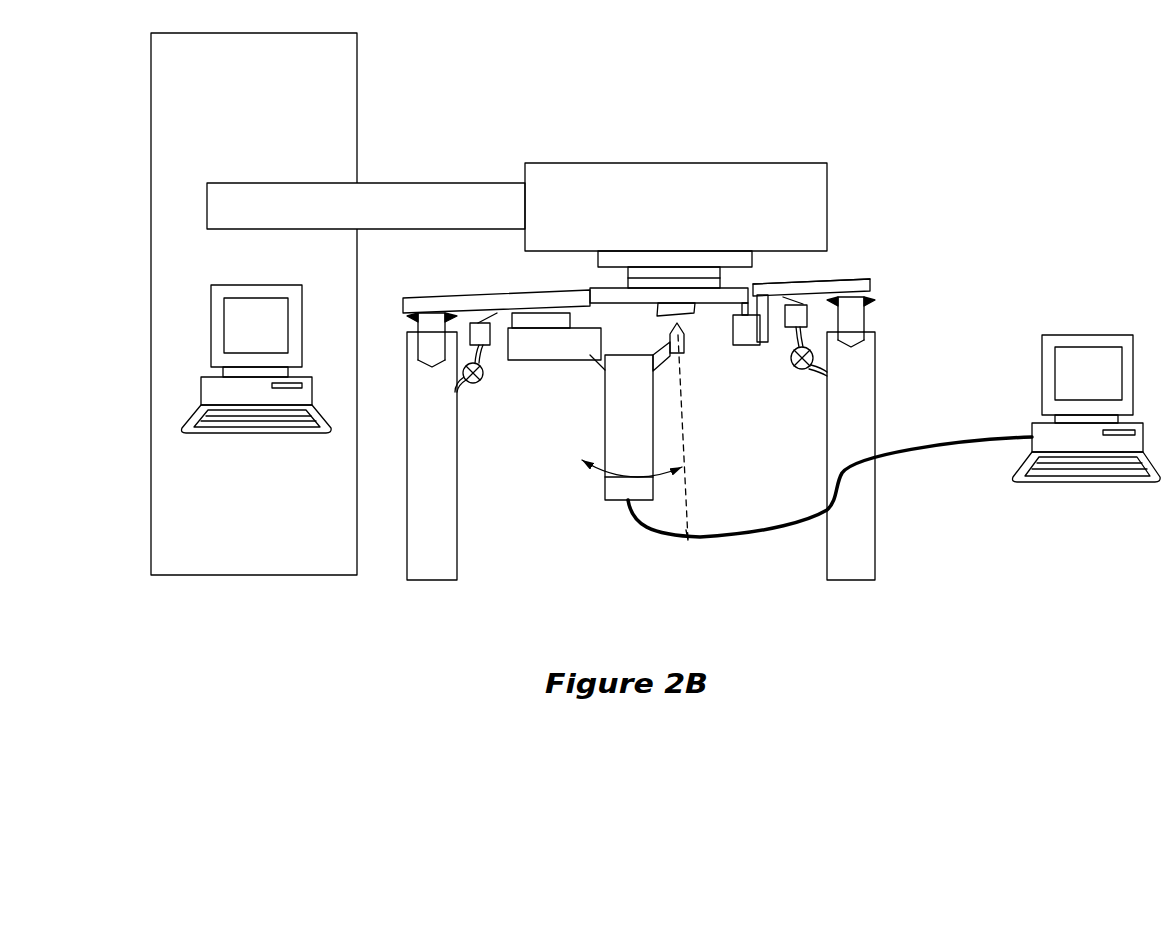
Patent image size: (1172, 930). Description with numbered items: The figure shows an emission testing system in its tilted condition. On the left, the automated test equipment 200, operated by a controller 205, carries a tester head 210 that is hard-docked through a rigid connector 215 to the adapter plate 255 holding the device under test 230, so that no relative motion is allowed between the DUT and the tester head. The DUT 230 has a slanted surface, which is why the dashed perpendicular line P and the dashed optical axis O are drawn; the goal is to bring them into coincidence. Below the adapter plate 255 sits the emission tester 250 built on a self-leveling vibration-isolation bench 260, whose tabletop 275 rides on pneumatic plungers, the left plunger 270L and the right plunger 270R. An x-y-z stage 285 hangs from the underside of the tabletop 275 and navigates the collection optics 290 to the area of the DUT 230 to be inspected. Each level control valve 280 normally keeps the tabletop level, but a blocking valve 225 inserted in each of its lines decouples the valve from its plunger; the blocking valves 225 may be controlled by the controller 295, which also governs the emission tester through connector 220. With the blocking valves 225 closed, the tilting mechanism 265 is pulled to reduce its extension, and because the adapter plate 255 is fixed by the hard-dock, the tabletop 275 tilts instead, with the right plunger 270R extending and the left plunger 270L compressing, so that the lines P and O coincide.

The automated test equipment (ATE) 200 is at (278, 109).
The controller / pre-programmed computer 205 is at (281, 343).
The tester head 210 is at (692, 224).
The rigid connector 215 is at (723, 277).
The connector 220 is at (898, 453).
The blocking valve 225 is at (804, 372).
The device under test (DUT) 230 is at (687, 313).
The emission tester 250 is at (908, 227).
The adapter plate 255 is at (602, 288).
The self-leveling vibration-isolation bench 260 is at (895, 273).
The tilting mechanism 265 is at (748, 342).
The left plunger 270L is at (434, 349).
The right plunger 270R is at (869, 317).
The tabletop 275 is at (846, 279).
The level control valve 280 is at (492, 349).
The x-y-z stage 285 is at (556, 341).
The collection optics 290 is at (684, 349).
The controller 295 is at (1087, 408).
The perpendicular line P is at (690, 513).
The optical axis O is at (688, 563).